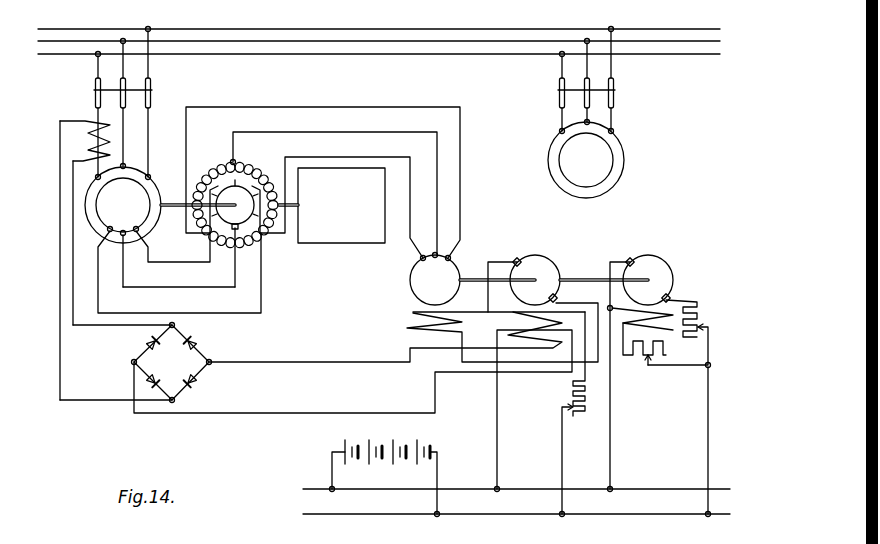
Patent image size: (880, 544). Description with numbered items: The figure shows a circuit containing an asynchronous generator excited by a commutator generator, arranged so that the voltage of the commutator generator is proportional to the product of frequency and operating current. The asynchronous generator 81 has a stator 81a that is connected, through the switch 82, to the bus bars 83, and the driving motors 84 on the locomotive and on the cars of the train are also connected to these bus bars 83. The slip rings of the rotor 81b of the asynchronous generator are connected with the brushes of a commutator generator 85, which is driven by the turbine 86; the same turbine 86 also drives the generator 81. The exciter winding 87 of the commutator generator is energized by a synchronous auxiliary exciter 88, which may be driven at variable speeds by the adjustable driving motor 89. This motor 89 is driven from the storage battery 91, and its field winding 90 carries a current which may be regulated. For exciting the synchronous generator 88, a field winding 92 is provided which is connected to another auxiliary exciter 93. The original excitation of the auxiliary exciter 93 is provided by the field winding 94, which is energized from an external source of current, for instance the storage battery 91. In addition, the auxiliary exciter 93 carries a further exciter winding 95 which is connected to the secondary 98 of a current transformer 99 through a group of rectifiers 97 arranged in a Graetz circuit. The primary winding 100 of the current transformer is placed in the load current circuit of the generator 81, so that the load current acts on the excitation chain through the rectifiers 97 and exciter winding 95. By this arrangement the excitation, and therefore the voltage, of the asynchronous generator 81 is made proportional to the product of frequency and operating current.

The asynchronous generator 81 is at (176, 173).
The stator 81a is at (143, 230).
The rotor 81b is at (98, 218).
The switch 82 is at (152, 90).
The bus bars 83 is at (322, 29).
The driving motors 84 is at (625, 158).
The commutator generator 85 is at (243, 193).
The turbine 86 is at (360, 237).
The exciter winding 87 is at (262, 237).
The synchronous auxiliary exciter 88 is at (326, 294).
The adjustable driving motor 89 is at (670, 267).
The field winding 90 is at (667, 330).
The storage battery 91 is at (422, 442).
The field winding 92 is at (413, 313).
The auxiliary exciter 93 is at (547, 261).
The field winding 94 is at (385, 332).
The exciter winding 95 is at (545, 345).
The rectifiers 97 is at (184, 375).
The secondary 98 is at (67, 141).
The current transformer 99 is at (86, 115).
The primary winding 100 is at (92, 133).